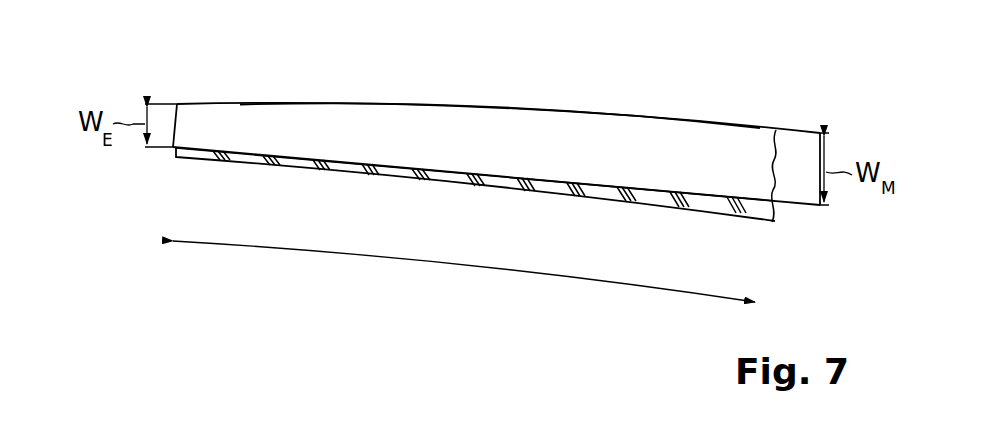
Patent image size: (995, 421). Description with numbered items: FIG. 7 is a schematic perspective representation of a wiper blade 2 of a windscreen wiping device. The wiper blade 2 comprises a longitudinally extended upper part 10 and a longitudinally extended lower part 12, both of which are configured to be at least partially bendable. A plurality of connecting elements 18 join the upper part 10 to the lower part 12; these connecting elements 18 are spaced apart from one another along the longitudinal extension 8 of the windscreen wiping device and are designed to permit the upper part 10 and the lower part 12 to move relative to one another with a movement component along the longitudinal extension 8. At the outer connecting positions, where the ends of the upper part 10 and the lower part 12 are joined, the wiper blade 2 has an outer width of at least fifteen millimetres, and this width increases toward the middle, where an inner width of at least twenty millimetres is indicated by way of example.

The wiper blade 2 is at (446, 103).
The longitudinal extension 8 is at (456, 268).
The upper part 10 is at (614, 108).
The lower part 12 is at (661, 207).
The connecting elements 18 is at (366, 180).